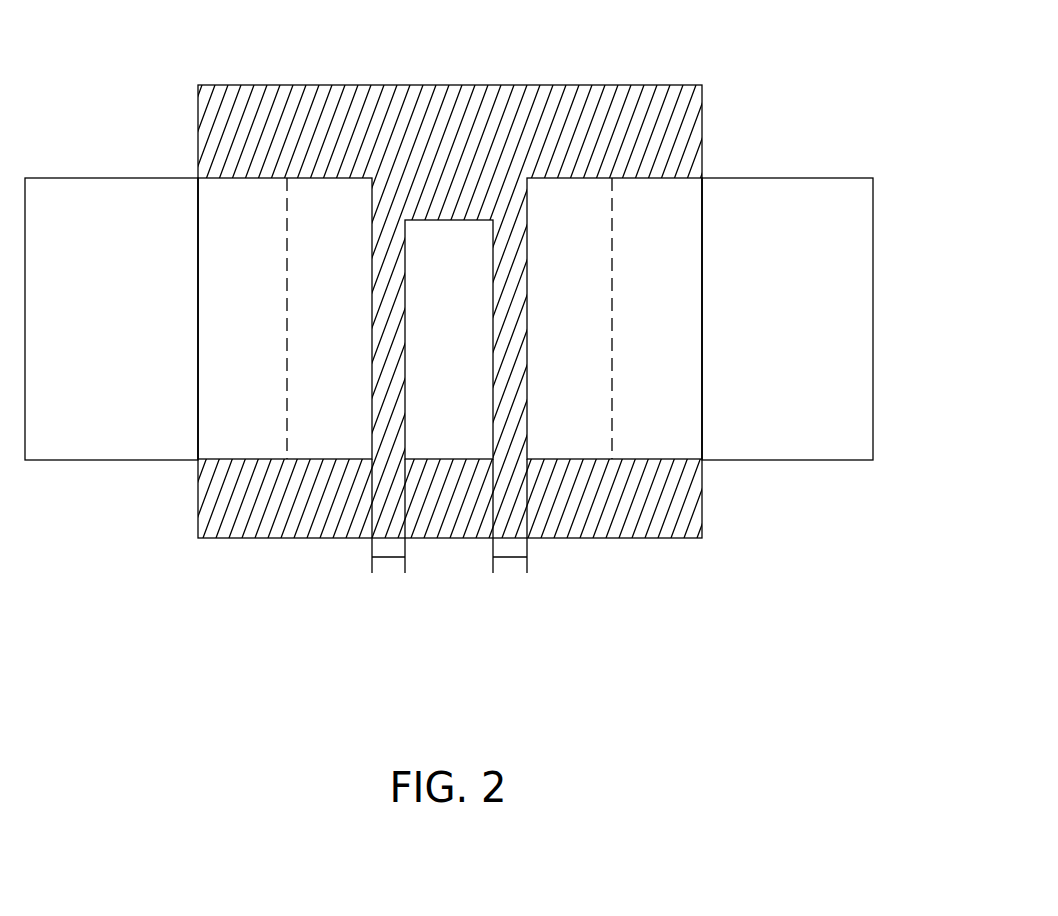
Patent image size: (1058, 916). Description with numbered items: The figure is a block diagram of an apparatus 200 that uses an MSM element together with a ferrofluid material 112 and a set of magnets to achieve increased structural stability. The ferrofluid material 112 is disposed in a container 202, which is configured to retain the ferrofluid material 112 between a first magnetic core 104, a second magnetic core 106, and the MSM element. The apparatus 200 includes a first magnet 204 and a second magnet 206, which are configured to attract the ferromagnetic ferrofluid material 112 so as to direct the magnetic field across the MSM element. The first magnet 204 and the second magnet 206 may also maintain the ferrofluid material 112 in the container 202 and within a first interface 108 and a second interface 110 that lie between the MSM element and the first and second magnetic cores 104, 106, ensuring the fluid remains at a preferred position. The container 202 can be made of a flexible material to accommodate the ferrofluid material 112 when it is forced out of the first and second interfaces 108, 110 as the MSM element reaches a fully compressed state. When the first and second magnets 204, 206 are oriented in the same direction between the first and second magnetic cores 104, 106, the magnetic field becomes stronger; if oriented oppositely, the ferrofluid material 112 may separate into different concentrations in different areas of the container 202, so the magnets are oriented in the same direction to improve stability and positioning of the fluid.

The apparatus 200 is at (449, 390).
The container 202 is at (199, 123).
The ferrofluid material 112 is at (615, 112).
The first magnetic core 104 is at (94, 388).
The second magnetic core 106 is at (767, 383).
The first magnet 204 is at (221, 385).
The second magnet 206 is at (552, 370).
The first interface 108 is at (388, 561).
The second interface 110 is at (510, 561).